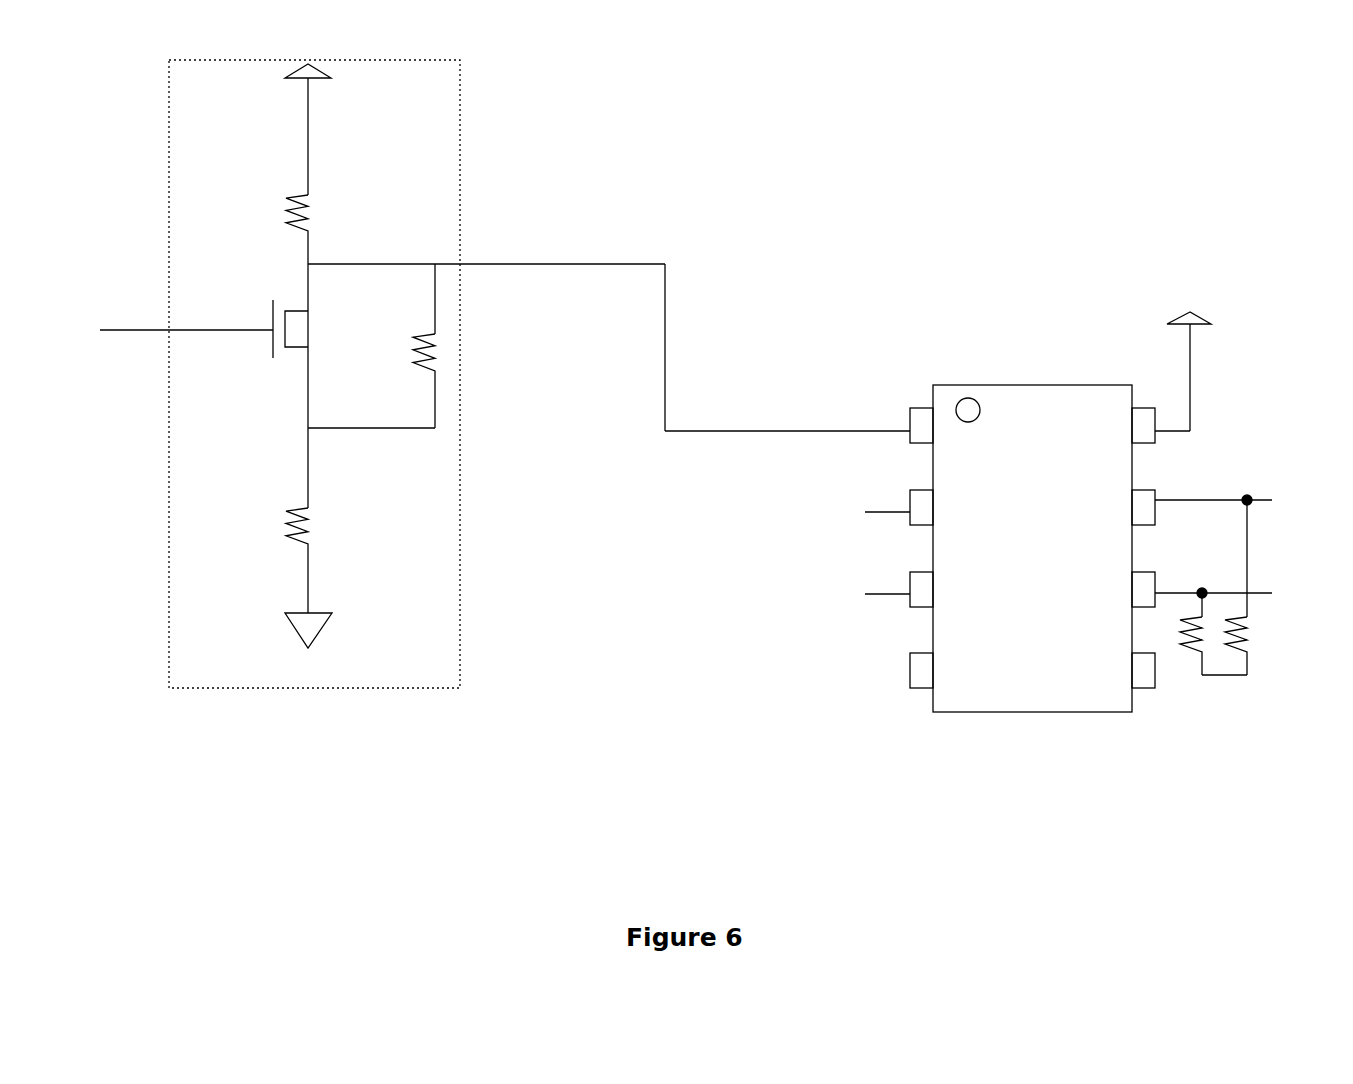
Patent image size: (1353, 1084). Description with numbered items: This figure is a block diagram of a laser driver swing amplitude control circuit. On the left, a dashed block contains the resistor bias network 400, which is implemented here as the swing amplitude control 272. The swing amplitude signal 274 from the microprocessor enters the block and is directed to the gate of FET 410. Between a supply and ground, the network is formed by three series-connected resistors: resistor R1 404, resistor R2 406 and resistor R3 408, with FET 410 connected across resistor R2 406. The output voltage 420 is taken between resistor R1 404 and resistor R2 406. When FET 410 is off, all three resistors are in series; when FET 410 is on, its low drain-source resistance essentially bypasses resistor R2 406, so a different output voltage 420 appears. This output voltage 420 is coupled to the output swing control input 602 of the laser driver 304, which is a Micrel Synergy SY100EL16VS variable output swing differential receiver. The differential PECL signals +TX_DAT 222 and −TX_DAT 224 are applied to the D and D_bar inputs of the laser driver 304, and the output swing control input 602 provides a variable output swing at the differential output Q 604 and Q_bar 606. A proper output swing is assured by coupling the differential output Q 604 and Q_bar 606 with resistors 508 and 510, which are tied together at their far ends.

The swing amplitude control 272 is at (314, 397).
The resistor bias network 400 is at (242, 478).
The resistor R1 404 is at (330, 213).
The output voltage 420 is at (486, 333).
The swing amplitude signal 274 is at (186, 316).
The FET 410 is at (315, 329).
The resistor R2 406 is at (371, 346).
The resistor R3 408 is at (330, 526).
The output swing control input 602 is at (787, 417).
The differential PECL signal +TX_DAT 222 is at (874, 500).
The differential PECL signal −TX_DAT 224 is at (870, 582).
The laser driver 304 is at (1057, 527).
The differential output Q 604 is at (1213, 490).
The differential output Q_bar 606 is at (1213, 582).
The resistor 508 is at (1195, 634).
The resistor 510 is at (1268, 587).